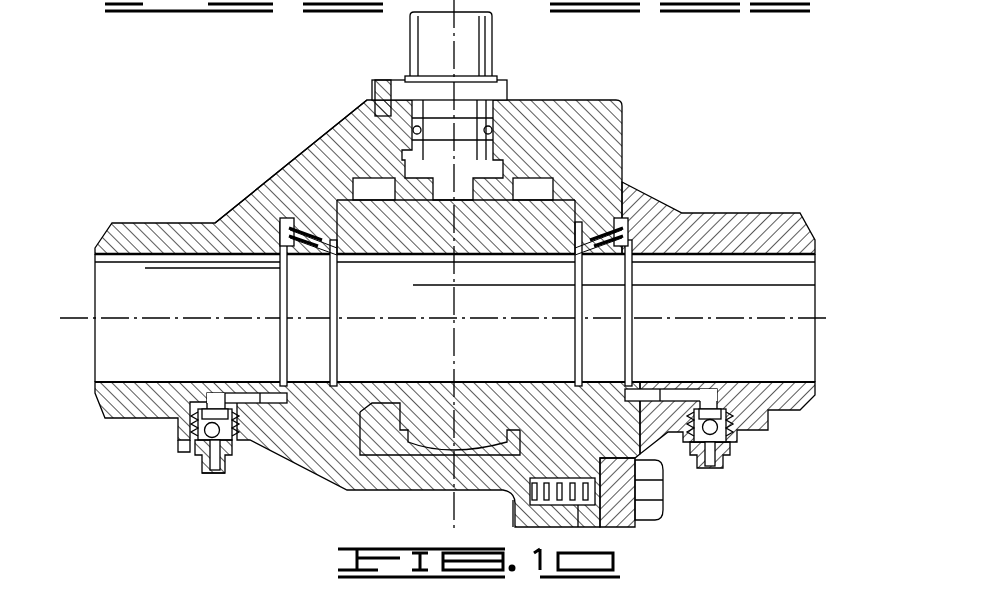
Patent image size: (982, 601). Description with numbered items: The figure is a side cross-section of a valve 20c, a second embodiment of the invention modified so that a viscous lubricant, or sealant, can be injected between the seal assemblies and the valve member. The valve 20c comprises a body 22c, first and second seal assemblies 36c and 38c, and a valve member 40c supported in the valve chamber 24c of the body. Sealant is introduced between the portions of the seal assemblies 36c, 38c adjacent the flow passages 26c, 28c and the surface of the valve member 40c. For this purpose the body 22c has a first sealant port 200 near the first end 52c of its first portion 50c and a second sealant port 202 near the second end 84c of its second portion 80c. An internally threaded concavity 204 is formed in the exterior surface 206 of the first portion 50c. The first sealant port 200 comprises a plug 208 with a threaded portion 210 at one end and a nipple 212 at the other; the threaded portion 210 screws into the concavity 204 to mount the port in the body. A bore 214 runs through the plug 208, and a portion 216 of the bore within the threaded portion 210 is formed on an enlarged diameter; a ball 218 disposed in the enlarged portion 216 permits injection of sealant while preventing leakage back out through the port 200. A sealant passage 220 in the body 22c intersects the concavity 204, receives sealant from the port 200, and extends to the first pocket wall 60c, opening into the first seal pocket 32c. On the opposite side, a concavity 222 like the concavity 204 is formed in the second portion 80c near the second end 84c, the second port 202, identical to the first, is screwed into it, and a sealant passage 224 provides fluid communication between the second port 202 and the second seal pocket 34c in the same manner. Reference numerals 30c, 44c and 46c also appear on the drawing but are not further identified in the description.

The valve 20c is at (622, 95).
The body 22c is at (320, 172).
The valve chamber 24c is at (373, 180).
The passage 26c is at (137, 307).
The passage 28c is at (792, 301).
The flow axis 30c is at (835, 315).
The first seal pocket 32c is at (287, 201).
The second seal pocket 34c is at (617, 200).
The first seal assembly 36c is at (323, 228).
The second seal assembly 38c is at (582, 218).
The valve member 40c is at (434, 428).
The ball bore 44c is at (462, 258).
The ball lower portion 46c is at (356, 428).
The first portion of the valve body 50c is at (175, 232).
The first end 52c is at (100, 383).
The first pocket wall 60c is at (308, 440).
The second portion of the body 80c is at (730, 222).
The second end 84c is at (818, 386).
The first sealant port 200 is at (200, 465).
The second sealant port 202 is at (742, 448).
The internally threaded concavity 204 is at (185, 398).
The exterior surface 206 is at (185, 435).
The plug 208 is at (212, 438).
The threaded portion 210 is at (236, 450).
The nipple 212 is at (205, 462).
The bore 214 is at (212, 478).
The enlarged portion of the bore 216 is at (236, 398).
The ball 218 is at (196, 452).
The sealant passage 220 is at (265, 398).
The concavity 222 is at (722, 408).
The sealant passage 224 is at (672, 393).